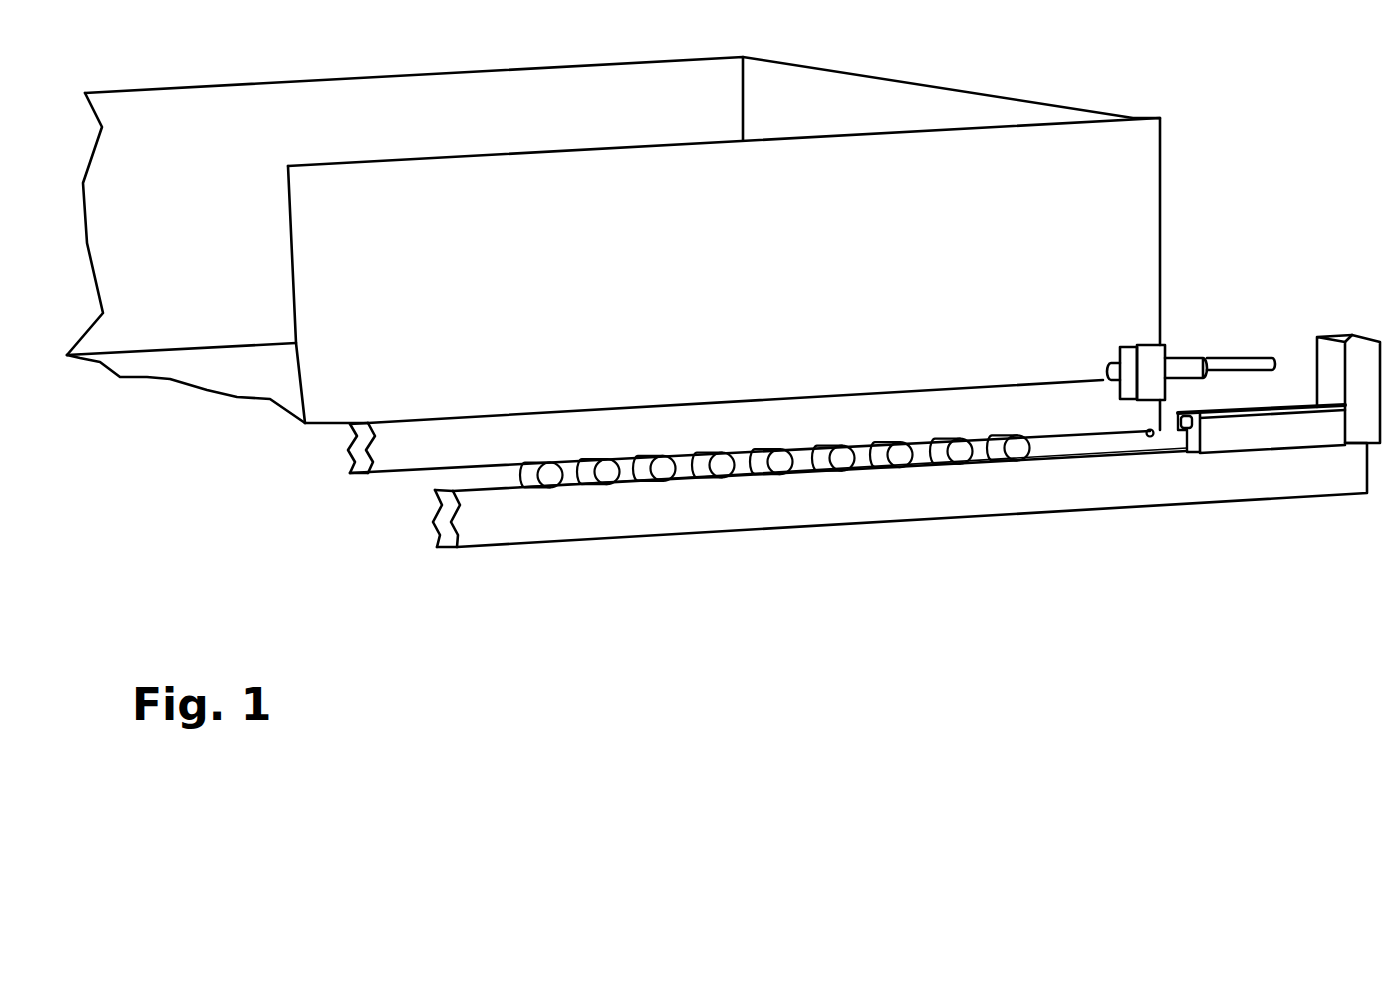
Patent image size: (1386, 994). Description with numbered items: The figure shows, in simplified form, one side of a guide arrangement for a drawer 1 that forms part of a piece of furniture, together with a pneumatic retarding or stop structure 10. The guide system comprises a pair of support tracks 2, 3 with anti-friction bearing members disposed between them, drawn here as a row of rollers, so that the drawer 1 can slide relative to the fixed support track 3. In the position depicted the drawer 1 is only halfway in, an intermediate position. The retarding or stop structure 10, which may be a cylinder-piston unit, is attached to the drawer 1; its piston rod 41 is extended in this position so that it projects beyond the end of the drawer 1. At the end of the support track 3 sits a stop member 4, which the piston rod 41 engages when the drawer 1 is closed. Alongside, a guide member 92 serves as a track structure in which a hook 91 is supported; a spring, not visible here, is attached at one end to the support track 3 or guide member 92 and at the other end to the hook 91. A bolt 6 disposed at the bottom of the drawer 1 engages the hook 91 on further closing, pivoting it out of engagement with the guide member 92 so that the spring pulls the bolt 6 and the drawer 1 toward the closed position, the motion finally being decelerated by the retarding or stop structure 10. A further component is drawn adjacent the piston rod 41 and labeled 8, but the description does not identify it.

The drawer 1 is at (533, 296).
The support track 2 is at (735, 423).
The support track 3 is at (880, 490).
The stop member 4 is at (1342, 358).
The bolt 6 is at (1147, 436).
The slider block 8 is at (1128, 391).
The retarding or stop structure 10 is at (1185, 368).
The piston rod 41 is at (1232, 358).
The hook 91 is at (1186, 437).
The guide member 92 is at (1270, 432).